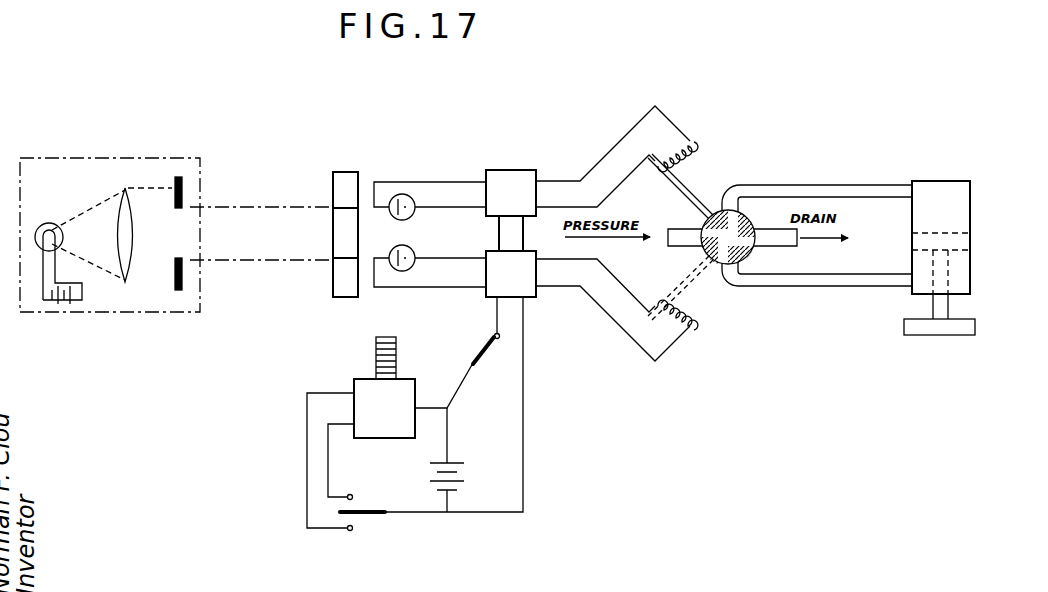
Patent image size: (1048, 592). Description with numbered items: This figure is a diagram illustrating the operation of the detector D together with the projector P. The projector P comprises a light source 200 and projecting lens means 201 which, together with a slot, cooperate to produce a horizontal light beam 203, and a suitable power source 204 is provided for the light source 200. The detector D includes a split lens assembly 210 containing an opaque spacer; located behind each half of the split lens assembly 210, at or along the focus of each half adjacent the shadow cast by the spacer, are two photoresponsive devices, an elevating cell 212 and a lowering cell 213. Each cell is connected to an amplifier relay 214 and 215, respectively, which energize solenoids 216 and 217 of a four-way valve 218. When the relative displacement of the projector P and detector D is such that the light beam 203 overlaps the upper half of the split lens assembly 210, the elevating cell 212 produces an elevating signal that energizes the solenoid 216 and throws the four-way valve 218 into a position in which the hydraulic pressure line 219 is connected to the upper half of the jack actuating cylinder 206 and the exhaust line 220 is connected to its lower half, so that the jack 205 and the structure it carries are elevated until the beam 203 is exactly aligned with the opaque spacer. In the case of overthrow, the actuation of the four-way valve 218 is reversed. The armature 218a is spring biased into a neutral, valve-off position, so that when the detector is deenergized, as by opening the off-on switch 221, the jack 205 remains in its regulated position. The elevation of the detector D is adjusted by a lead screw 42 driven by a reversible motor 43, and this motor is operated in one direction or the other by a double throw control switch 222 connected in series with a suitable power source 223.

The projector P is at (120, 158).
The light source 200 is at (54, 224).
The projecting lens means 201 is at (122, 192).
The horizontal light beam 203 is at (235, 216).
The power source 204 is at (62, 302).
The split lens assembly 210 is at (332, 176).
The detector D is at (363, 170).
The elevating cell 212 is at (415, 203).
The lowering cell 213 is at (415, 252).
The amplifier relay 214 is at (520, 178).
The amplifier relay 215 is at (535, 294).
The solenoid 216 is at (692, 142).
The solenoid 217 is at (692, 330).
The four-way valve 218 is at (738, 220).
The armature 218a is at (665, 178).
The hydraulic pressure line 219 is at (685, 242).
The exhaust line 220 is at (784, 247).
The jack actuating cylinder 206 is at (972, 184).
The jack 205 is at (955, 337).
The lead screw 42 is at (375, 346).
The reversible motor 43 is at (384, 408).
The off-on switch 221 is at (476, 354).
The double throw control switch 222 is at (362, 516).
The power source 223 is at (455, 464).